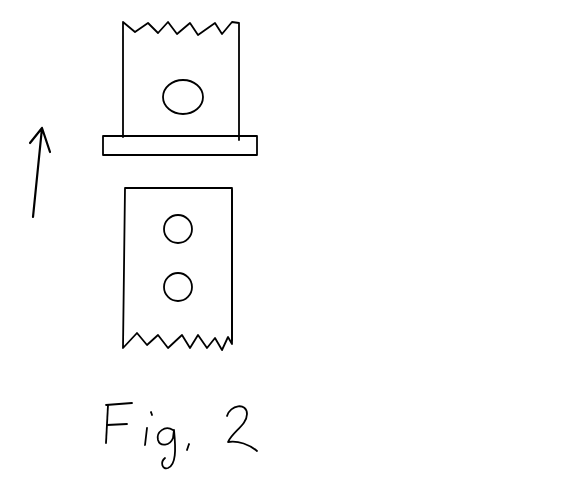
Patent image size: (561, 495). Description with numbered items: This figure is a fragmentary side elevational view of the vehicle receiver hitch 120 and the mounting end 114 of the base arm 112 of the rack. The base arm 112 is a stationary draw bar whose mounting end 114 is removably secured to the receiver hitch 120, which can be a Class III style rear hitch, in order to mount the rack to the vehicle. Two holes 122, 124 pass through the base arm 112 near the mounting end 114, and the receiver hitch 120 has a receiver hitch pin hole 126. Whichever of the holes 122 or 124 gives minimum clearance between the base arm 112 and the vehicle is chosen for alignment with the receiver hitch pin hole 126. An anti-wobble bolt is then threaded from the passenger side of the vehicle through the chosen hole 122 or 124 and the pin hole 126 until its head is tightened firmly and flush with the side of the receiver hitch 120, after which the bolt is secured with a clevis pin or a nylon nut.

The base arm 112 is at (227, 323).
The mounting end 114 is at (227, 243).
The receiver hitch 120 is at (228, 88).
The hole 122 is at (172, 230).
The hole 124 is at (172, 288).
The receiver hitch pin hole 126 is at (176, 90).